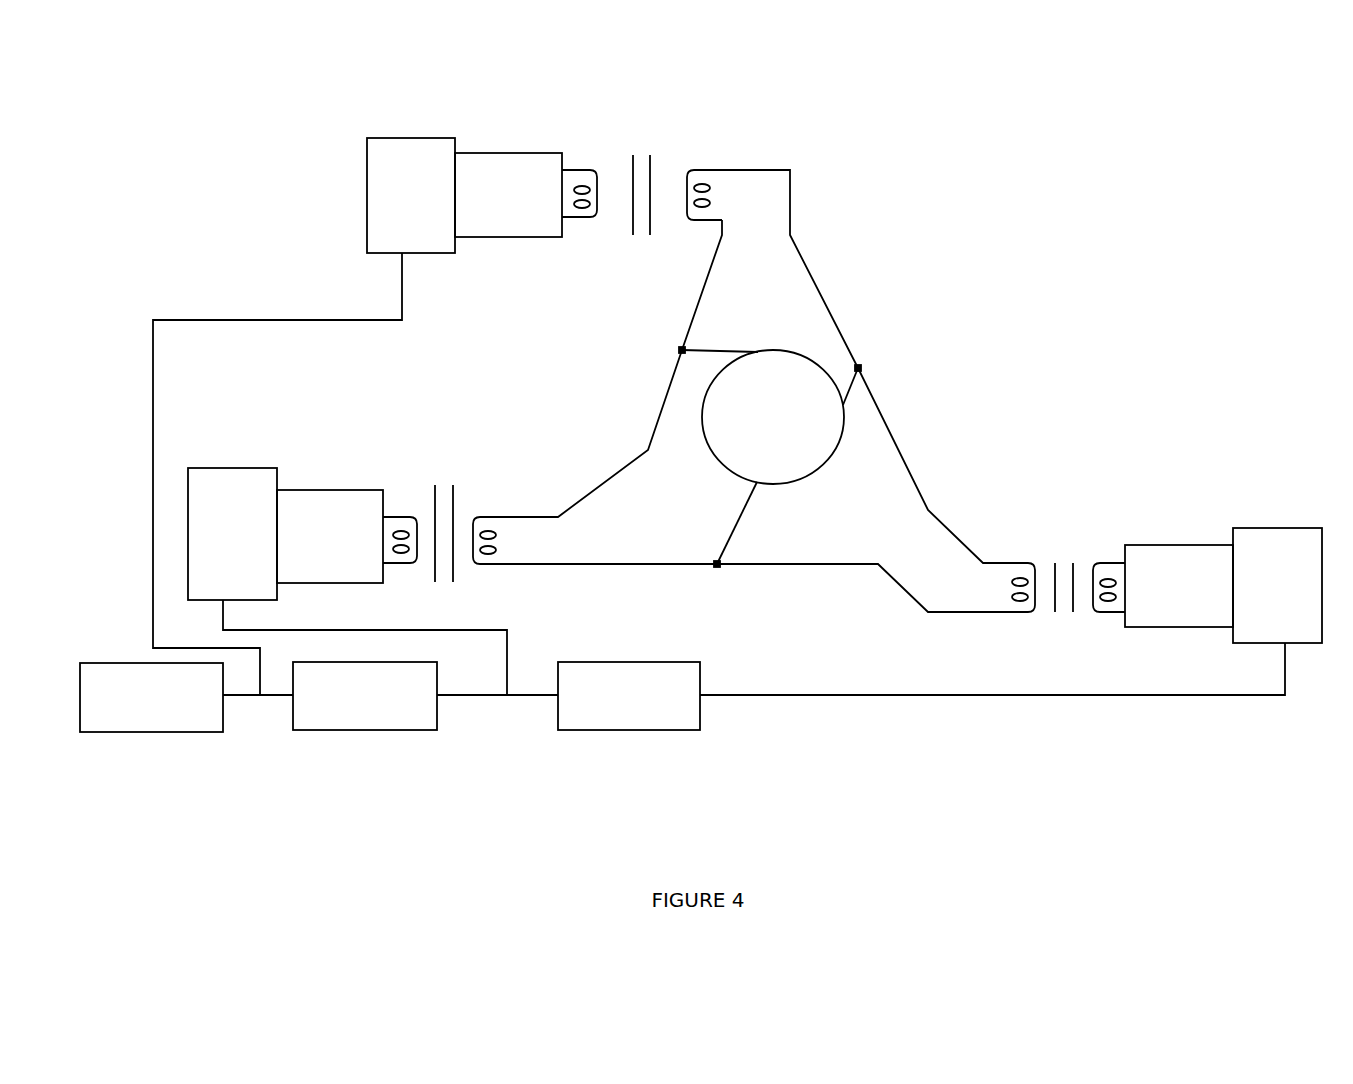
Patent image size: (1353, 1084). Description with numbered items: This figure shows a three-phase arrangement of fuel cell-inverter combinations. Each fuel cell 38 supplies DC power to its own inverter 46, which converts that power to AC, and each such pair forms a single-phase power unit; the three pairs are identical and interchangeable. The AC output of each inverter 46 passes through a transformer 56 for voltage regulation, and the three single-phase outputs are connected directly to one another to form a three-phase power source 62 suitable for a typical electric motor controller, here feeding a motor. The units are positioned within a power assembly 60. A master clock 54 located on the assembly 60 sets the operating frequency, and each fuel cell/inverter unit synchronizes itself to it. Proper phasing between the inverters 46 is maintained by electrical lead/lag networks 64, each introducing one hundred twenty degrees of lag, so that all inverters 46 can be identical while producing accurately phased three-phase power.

The fuel cell 38 is at (417, 137).
The inverter 46 is at (503, 152).
The transformer unit 56 is at (643, 150).
The power assembly 60 is at (920, 413).
The three-phase power source 62 is at (812, 360).
The master clock 54 is at (150, 732).
The electrical lead/lag network 64 is at (353, 730).